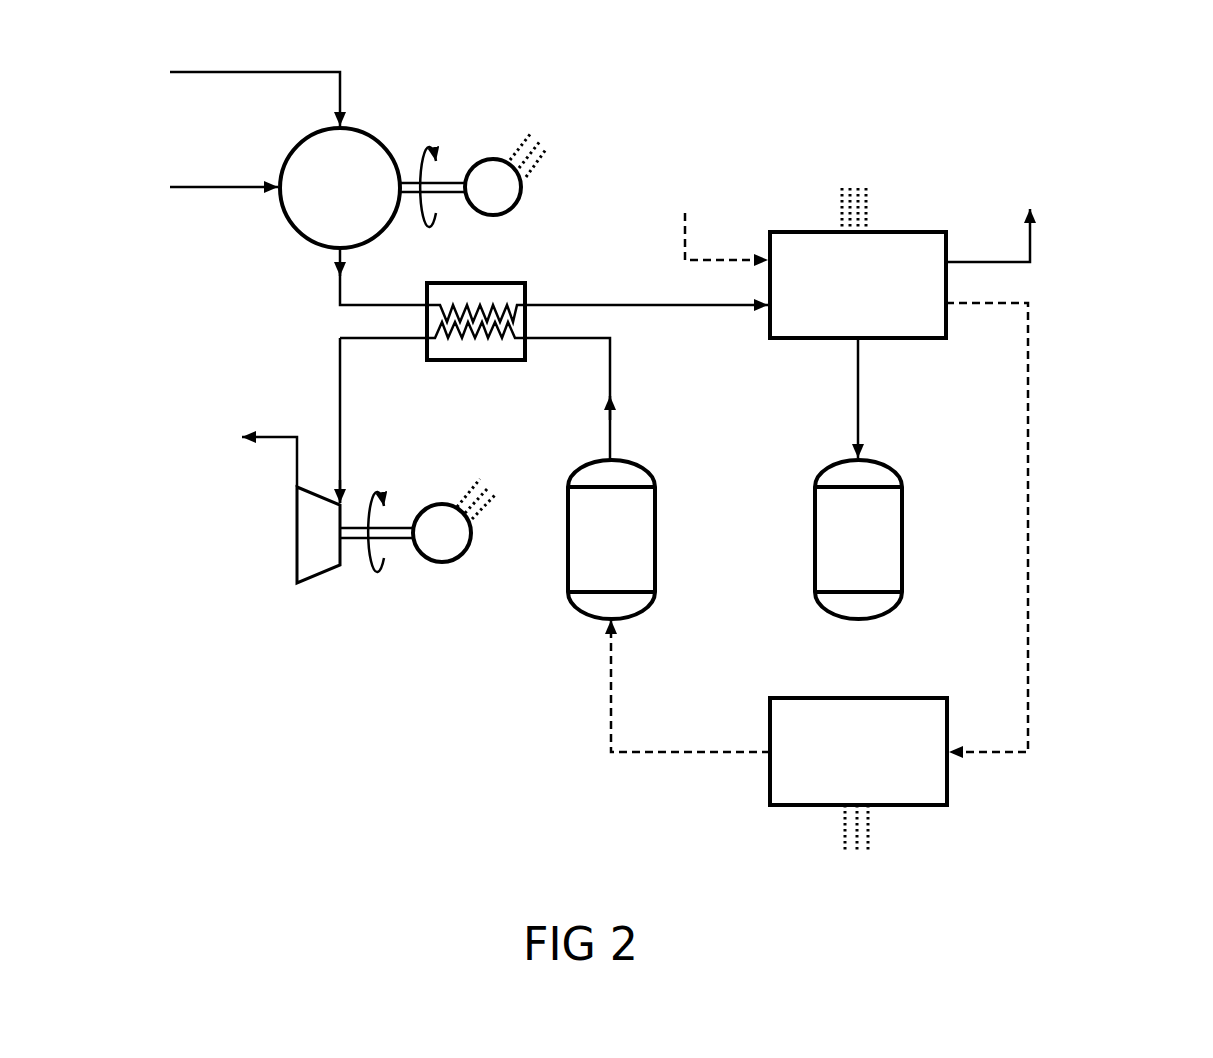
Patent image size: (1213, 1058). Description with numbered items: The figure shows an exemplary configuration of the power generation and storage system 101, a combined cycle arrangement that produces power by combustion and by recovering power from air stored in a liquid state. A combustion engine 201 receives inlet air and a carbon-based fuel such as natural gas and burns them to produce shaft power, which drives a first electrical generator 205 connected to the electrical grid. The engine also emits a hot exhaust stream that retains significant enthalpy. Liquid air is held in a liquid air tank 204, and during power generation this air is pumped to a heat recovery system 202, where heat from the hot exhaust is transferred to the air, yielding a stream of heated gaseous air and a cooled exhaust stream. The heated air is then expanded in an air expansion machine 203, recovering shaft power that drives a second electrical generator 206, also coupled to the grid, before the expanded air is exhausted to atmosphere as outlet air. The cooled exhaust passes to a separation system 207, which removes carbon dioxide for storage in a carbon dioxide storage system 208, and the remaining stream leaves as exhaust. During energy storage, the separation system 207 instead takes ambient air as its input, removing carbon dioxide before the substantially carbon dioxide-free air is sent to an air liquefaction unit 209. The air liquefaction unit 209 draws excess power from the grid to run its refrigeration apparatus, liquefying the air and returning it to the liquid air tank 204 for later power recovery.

The power generation and storage system 101 is at (1078, 84).
The combustion engine 201 is at (360, 127).
The heat recovery system 202 is at (525, 347).
The air expansion machine 203 is at (294, 570).
The liquid air tank 204 is at (633, 460).
The first electrical generator 205 is at (522, 198).
The second electrical generator 206 is at (468, 549).
The separation system 207 is at (897, 232).
The carbon dioxide storage system 208 is at (883, 460).
The air liquefaction unit 209 is at (902, 698).